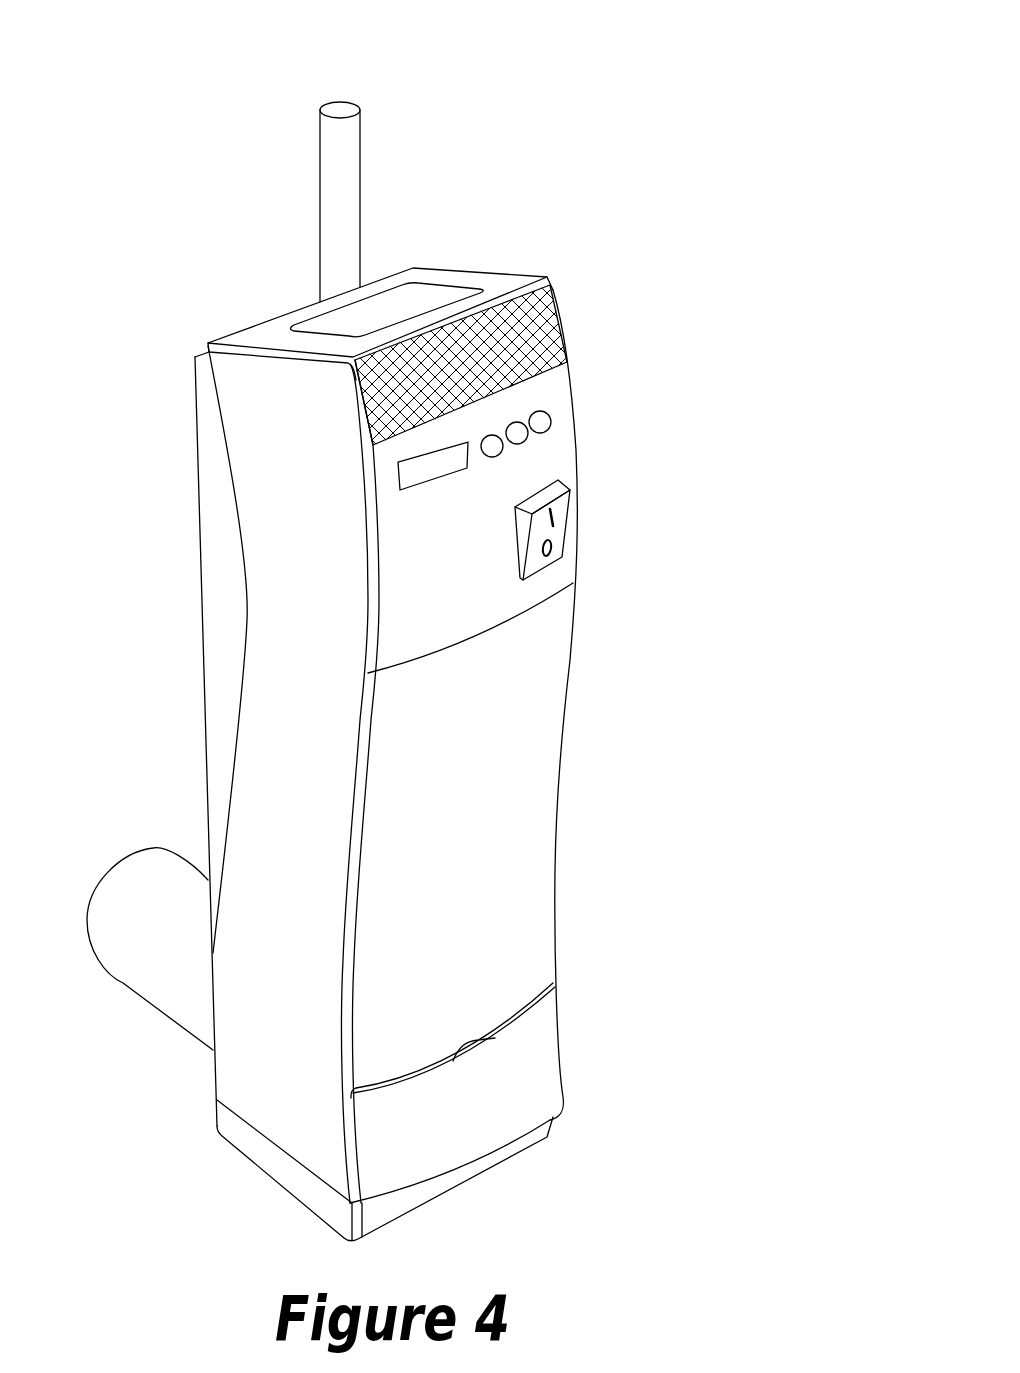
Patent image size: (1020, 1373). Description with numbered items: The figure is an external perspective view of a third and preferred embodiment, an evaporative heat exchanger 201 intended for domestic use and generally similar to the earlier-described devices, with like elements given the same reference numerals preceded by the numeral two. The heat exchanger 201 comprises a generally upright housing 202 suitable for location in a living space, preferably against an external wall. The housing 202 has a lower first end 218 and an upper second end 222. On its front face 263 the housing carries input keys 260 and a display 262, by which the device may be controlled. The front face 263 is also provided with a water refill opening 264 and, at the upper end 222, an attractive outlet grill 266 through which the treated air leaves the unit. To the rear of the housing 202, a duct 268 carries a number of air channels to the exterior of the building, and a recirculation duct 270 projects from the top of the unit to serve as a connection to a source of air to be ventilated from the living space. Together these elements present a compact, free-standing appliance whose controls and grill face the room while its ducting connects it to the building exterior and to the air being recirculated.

The evaporative heat exchanger 201 is at (573, 116).
The housing 202 is at (562, 753).
The lower first end 218 is at (547, 1063).
The upper second end 222 is at (466, 272).
The input keys 260 is at (551, 418).
The display 262 is at (470, 453).
The front face 263 is at (462, 867).
The water refill opening 264 is at (567, 527).
The outlet grill 266 is at (562, 325).
The duct 268 is at (125, 983).
The recirculation duct 270 is at (361, 140).